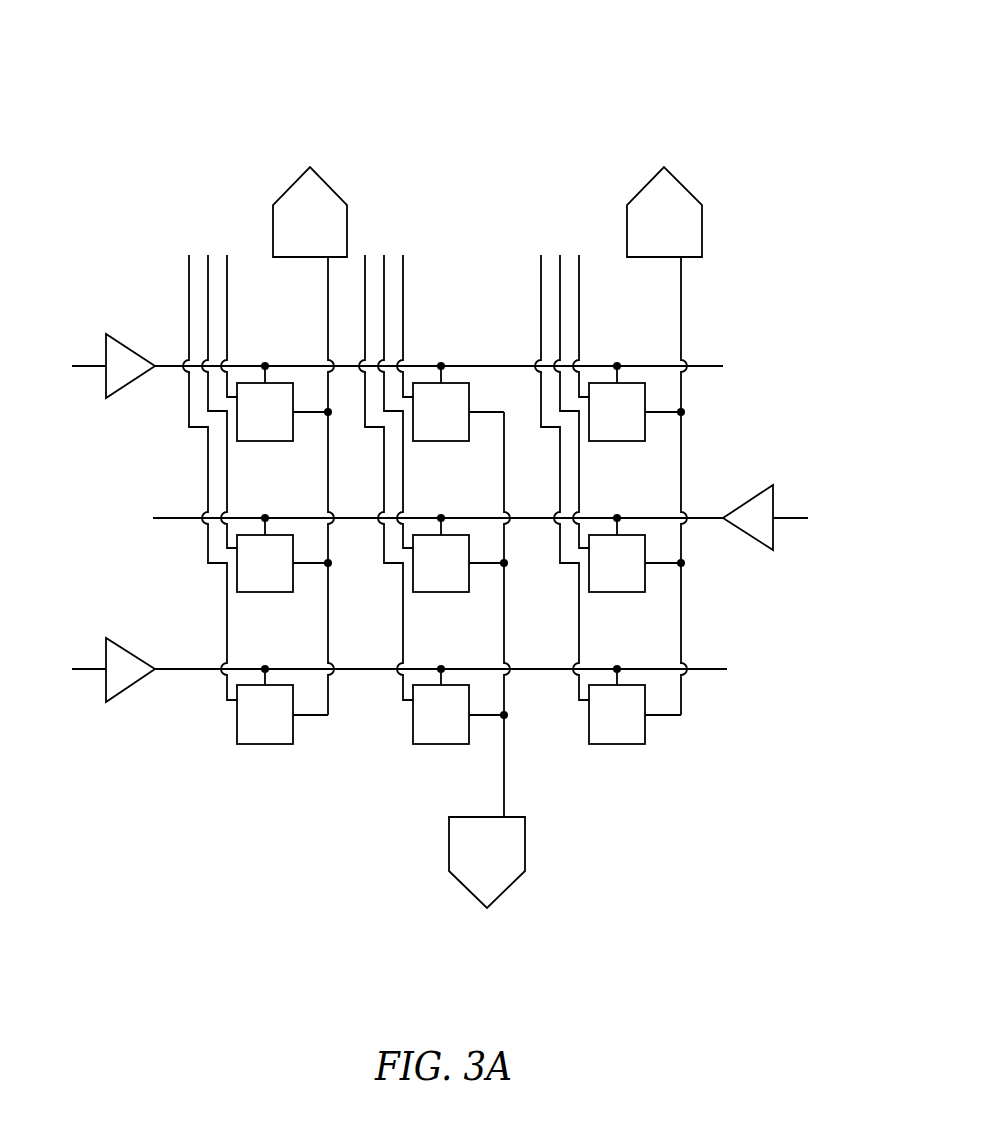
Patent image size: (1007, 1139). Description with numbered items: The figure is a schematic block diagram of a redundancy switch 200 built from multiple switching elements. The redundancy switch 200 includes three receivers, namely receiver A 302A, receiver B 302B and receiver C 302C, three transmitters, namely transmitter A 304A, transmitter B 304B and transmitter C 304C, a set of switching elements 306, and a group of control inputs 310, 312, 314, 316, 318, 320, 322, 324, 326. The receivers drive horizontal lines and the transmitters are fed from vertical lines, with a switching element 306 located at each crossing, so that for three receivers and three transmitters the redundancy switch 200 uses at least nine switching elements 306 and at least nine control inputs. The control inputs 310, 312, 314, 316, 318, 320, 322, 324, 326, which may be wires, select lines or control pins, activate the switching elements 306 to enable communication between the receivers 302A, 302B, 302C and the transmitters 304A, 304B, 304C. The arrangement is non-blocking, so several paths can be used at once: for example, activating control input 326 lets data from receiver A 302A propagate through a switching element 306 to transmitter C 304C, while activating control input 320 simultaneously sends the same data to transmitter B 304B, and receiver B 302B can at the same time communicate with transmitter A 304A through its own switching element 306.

The redundancy switch 200 is at (218, 48).
The receiver A 302A is at (52, 351).
The receiver B 302B is at (833, 504).
The receiver C 302C is at (52, 654).
The transmitter A 304A is at (312, 135).
The transmitter B 304B is at (486, 938).
The transmitter C 304C is at (664, 135).
The switching element 306 is at (269, 441).
The control input 310 is at (189, 164).
The control input 312 is at (208, 164).
The control input 314 is at (227, 164).
The control input 316 is at (365, 164).
The control input 318 is at (384, 164).
The control input 320 is at (403, 164).
The control input 322 is at (541, 164).
The control input 324 is at (560, 164).
The control input 326 is at (579, 164).